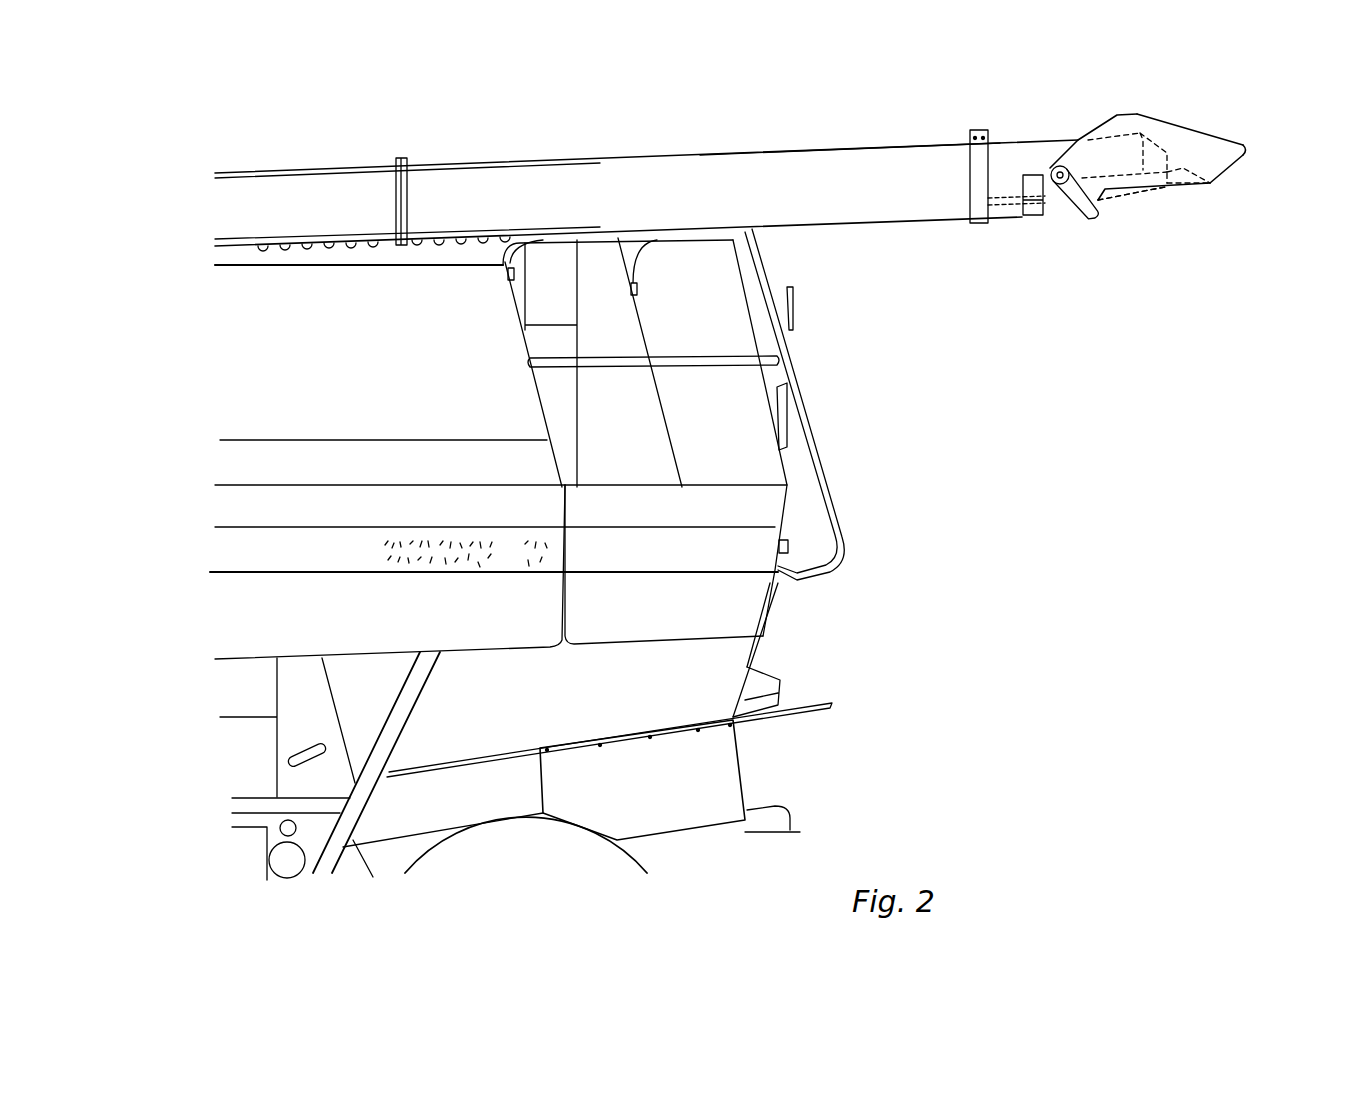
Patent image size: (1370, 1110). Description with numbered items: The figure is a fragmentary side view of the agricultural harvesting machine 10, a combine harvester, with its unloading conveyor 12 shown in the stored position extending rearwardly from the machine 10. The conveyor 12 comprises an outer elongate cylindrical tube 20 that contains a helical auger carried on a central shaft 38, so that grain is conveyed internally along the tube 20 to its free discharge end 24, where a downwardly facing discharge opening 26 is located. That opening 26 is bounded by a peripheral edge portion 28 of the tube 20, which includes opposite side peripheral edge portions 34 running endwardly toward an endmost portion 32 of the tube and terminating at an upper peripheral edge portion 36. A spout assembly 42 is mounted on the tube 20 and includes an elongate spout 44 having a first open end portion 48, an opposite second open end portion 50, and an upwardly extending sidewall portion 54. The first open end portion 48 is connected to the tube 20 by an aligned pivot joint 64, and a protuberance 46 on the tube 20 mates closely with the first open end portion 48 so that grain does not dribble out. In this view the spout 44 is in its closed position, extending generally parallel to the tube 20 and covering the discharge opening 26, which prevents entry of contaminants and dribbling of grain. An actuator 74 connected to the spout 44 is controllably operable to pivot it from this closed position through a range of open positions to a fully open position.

The agricultural harvesting machine 10 is at (810, 640).
The unloading conveyor 12 is at (760, 150).
The outer elongate cylindrical tube 20 is at (905, 143).
The free discharge end 24 is at (1053, 138).
The discharge opening 26 is at (1128, 175).
The peripheral edge portion 28 is at (1112, 183).
The side peripheral edge portions 34 is at (1131, 193).
The endmost portion 32 is at (1167, 153).
The upper peripheral edge portion 36 is at (1157, 193).
The shaft 38 is at (1180, 172).
The spout assembly 42 is at (1197, 190).
The spout 44 is at (1232, 173).
The protuberance 46 is at (1057, 217).
The first open end portion 48 is at (1083, 217).
The second open end portion 50 is at (1252, 163).
The sidewall portion 54 is at (1162, 127).
The pivot joint 64 is at (1060, 175).
The actuator 74 is at (1012, 203).